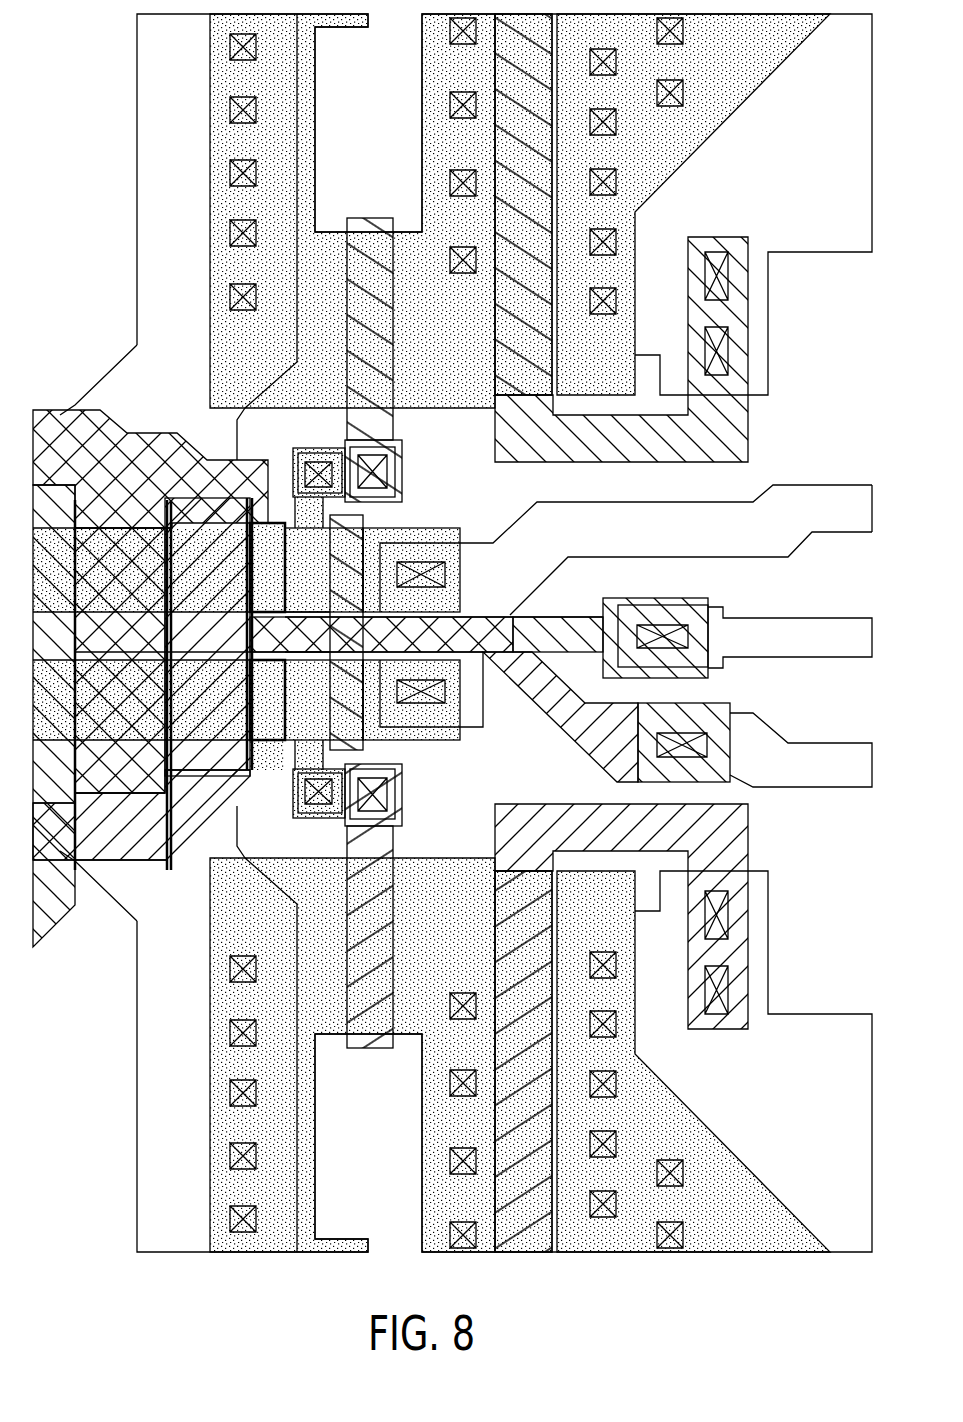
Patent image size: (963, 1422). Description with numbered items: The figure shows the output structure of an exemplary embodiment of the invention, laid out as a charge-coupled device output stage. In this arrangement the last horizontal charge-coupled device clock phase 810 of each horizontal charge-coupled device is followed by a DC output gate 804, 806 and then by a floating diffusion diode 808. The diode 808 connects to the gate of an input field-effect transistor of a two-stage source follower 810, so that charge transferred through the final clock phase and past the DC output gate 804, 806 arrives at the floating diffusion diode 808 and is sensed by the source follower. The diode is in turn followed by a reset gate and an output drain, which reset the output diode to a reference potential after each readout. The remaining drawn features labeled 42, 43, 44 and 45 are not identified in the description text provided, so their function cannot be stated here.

The photodiode region 42 is at (207, 637).
The transfer gate 43 is at (267, 631).
The floating diffusion region 44 is at (324, 633).
The reset transistor contact 45 is at (411, 632).
The DC output gate 804 is at (135, 785).
The DC output gate 806 is at (220, 777).
The floating diffusion diode 808 is at (285, 745).
The last horizontal charge-coupled device clock phase 810 is at (455, 535).